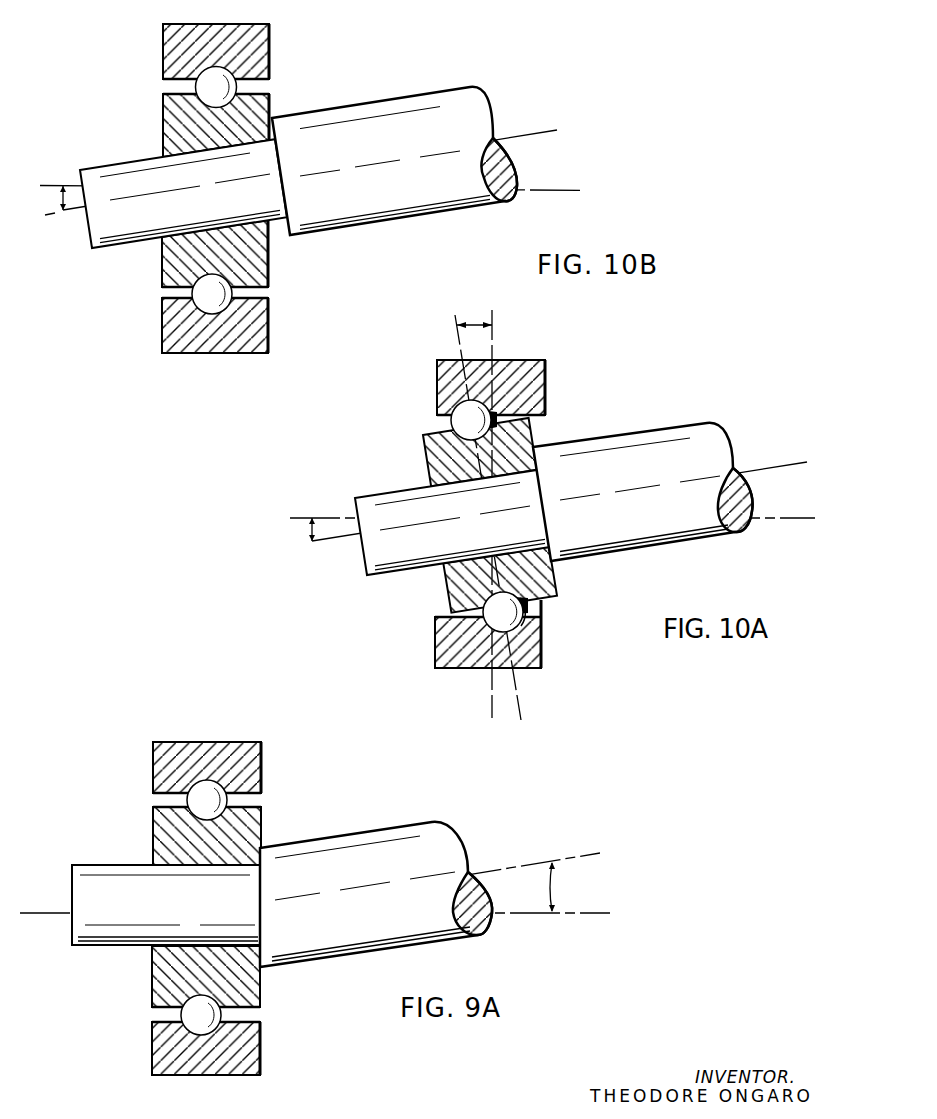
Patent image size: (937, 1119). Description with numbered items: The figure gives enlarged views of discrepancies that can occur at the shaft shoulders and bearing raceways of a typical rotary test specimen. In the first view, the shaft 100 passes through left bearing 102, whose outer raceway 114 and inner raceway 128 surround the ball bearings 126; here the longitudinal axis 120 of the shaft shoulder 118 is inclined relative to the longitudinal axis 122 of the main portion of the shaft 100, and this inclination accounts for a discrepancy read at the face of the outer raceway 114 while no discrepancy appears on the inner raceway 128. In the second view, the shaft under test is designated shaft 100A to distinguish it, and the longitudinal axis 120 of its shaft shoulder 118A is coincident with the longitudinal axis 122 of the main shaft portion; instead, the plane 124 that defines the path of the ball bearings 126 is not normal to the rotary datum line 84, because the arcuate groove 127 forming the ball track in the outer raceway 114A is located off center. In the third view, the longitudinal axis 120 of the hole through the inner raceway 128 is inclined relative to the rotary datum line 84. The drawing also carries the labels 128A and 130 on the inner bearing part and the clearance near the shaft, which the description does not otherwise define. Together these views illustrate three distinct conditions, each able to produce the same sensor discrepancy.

In FIG. 9A, the rotary datum line 84 is at (567, 915).
In FIG. 10A, the rotary datum line 84 is at (680, 522).
In FIG. 10B, the rotary datum line 84 is at (455, 193).
In FIG. 9A, the shaft 100 is at (452, 848).
In FIG. 10A, the shaft 100A is at (692, 425).
In FIG. 10B, the shaft 100A is at (447, 92).
In FIG. 9A, the left bearing 102 is at (268, 812).
In FIG. 10A, the left bearing 102 is at (551, 391).
In FIG. 10B, the left bearing 102 is at (276, 45).
In FIG. 9A, the outer raceway 114 is at (255, 1073).
In FIG. 10B, the outer raceway 114 is at (212, 348).
In FIG. 10A, the outer raceway 114A is at (450, 662).
In FIG. 9A, the shaft shoulder 118 is at (102, 945).
In FIG. 10A, the shaft shoulder 118A is at (370, 560).
In FIG. 10B, the shaft shoulder 118A is at (127, 243).
In FIG. 9A, the longitudinal axis 120 is at (93, 905).
In FIG. 10A, the longitudinal axis 120 is at (373, 530).
In FIG. 10B, the longitudinal axis 120 is at (105, 207).
In FIG. 9A, the longitudinal axis 122 is at (558, 858).
In FIG. 10A, the longitudinal axis 122 is at (805, 462).
In FIG. 10B, the longitudinal axis 122 is at (545, 137).
In FIG. 10A, the plane 124 is at (457, 338).
In FIG. 9A, the ball bearings 126 is at (217, 798).
In FIG. 10A, the ball bearings 126 is at (463, 410).
In FIG. 10B, the ball bearings 126 is at (208, 72).
In FIG. 10A, the arcuate groove 127 is at (507, 670).
In FIG. 9A, the inner raceway 128 is at (155, 833).
In FIG. 10A, the inner raceway 128 is at (428, 460).
In FIG. 10B, the bearing block 128A is at (177, 125).
In FIG. 10B, the clearance gap 130 is at (229, 147).